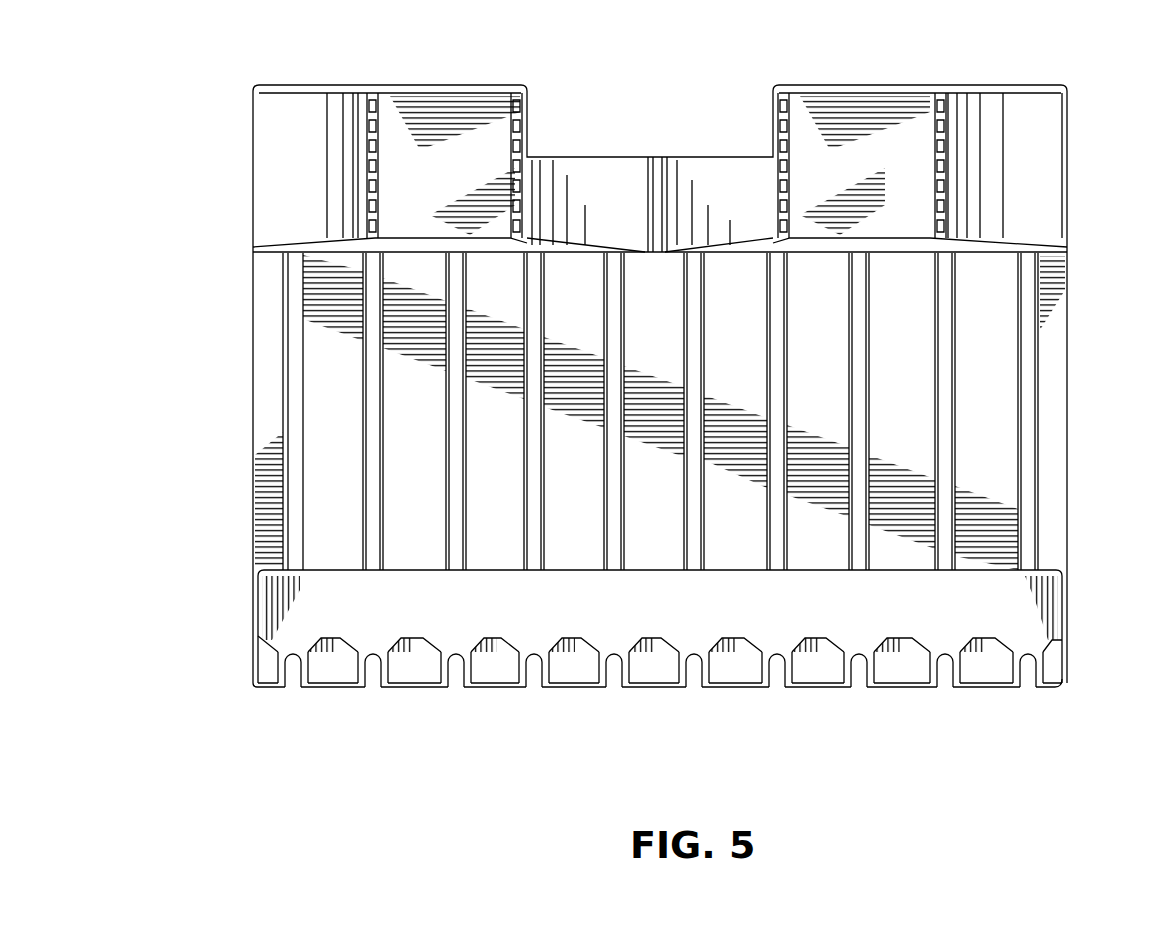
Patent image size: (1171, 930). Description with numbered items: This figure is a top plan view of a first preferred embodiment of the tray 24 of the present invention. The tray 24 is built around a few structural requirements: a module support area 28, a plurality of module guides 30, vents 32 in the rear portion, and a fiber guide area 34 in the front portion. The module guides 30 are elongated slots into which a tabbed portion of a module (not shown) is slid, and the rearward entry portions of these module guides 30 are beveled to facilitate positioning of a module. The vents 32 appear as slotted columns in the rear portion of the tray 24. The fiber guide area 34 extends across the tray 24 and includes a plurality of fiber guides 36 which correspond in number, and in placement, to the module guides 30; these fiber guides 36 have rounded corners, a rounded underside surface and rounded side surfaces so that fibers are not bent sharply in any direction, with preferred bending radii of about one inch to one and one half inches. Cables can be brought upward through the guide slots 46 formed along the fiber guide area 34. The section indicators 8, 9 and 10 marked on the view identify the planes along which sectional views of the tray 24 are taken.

The tray 24 is at (1070, 383).
The module support area 28 is at (706, 424).
The module guides 30 is at (283, 410).
The vents 32 is at (378, 136).
The fiber guide area 34 is at (250, 612).
The fiber guides 36 is at (495, 655).
The guide slots 46 is at (695, 665).
The section line 8- 8 is at (204, 190).
The section line 9- 9 is at (855, 78).
The section line 10- 10 is at (903, 655).